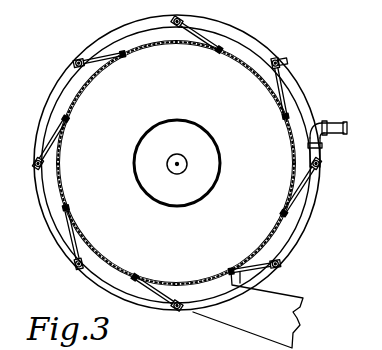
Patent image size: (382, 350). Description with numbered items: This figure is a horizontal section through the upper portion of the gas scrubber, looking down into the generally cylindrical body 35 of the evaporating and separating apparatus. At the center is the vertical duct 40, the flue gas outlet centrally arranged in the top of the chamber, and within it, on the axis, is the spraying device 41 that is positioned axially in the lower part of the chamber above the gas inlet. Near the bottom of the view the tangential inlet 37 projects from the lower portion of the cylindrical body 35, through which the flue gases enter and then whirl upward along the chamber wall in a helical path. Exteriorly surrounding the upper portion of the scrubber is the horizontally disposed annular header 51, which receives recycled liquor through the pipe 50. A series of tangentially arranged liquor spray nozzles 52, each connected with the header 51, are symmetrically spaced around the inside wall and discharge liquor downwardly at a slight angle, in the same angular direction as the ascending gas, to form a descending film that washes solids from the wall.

The cylindrical body 35 is at (294, 122).
The tangential inlet 37 is at (284, 302).
The vertical duct 40 is at (221, 143).
The spraying device 41 is at (184, 173).
The pipe 50 is at (341, 131).
The annular header 51 is at (311, 201).
The liquor spray nozzles 52 is at (126, 58).